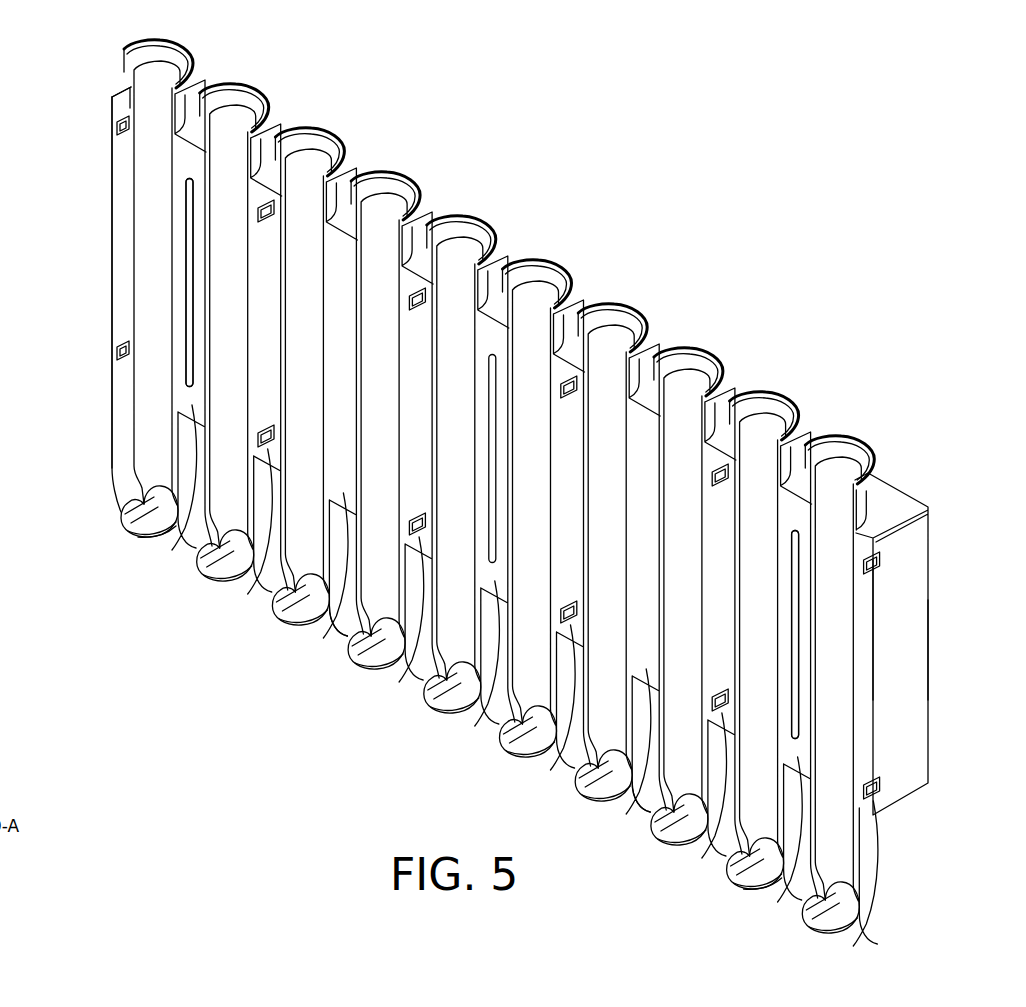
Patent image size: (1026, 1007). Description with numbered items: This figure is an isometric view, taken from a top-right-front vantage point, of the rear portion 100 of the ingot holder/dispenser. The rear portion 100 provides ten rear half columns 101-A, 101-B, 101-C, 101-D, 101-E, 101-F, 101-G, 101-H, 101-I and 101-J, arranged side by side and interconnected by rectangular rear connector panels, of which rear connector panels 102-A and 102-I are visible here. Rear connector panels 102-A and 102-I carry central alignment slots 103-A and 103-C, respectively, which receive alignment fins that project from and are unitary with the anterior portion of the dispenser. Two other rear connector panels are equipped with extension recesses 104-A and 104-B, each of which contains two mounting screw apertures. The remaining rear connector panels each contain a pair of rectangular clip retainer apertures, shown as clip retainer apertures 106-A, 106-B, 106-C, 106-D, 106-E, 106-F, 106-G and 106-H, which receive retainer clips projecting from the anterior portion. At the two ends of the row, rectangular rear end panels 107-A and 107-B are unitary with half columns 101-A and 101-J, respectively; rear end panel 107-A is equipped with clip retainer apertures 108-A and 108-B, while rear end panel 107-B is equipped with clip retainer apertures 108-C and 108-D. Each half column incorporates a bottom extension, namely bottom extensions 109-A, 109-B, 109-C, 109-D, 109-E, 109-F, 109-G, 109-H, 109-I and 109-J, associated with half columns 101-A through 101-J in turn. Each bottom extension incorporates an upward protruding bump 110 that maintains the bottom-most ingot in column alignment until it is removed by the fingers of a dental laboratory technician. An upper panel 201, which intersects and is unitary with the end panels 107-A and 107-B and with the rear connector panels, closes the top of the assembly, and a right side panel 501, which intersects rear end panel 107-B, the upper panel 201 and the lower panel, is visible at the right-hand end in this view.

The rear portion 100 is at (104, 77).
The rear half column 101-A is at (152, 106).
The rear half column 101-B is at (271, 334).
The rear half column 101-C is at (346, 378).
The rear half column 101-D is at (424, 422).
The rear half column 101-E is at (498, 466).
The rear half column 101-F is at (574, 510).
The rear half column 101-G is at (651, 554).
The rear half column 101-H is at (726, 598).
The rear half column 101-I is at (799, 641).
The rear half column 101-J is at (871, 685).
The rear connector panel 102-A is at (173, 542).
The rear connector panel 102-I is at (778, 894).
The central alignment slot 103-A is at (185, 272).
The central alignment slot 103-C is at (800, 640).
The extension recess 104-A is at (340, 634).
The extension recess 104-B is at (643, 810).
The clip retainer aperture 106-A is at (267, 198).
The clip retainer aperture 106-B is at (265, 452).
The clip retainer aperture 106-C is at (418, 286).
The clip retainer aperture 106-D is at (416, 542).
The clip retainer aperture 106-E is at (569, 374).
The clip retainer aperture 106-F is at (568, 630).
The clip retainer aperture 106-G is at (721, 462).
The clip retainer aperture 106-H is at (718, 718).
The rear end panel 107-A is at (118, 189).
The rear end panel 107-B is at (900, 605).
The clip retainer aperture 108-A is at (104, 126).
The clip retainer aperture 108-B is at (104, 350).
The clip retainer aperture 108-C is at (880, 556).
The clip retainer aperture 108-D is at (880, 782).
The bottom extension 109-A is at (122, 514).
The bottom extension 109-B is at (198, 558).
The bottom extension 109-C is at (273, 602).
The bottom extension 109-D is at (349, 646).
The bottom extension 109-E is at (425, 690).
The bottom extension 109-F is at (501, 734).
The bottom extension 109-G is at (577, 778).
The bottom extension 109-H is at (653, 822).
The bottom extension 109-I is at (729, 866).
The bottom extension 109-J is at (804, 910).
The upward protruding bump 110 is at (127, 528).
The upper panel 201 is at (888, 505).
The right side panel 501 is at (900, 640).